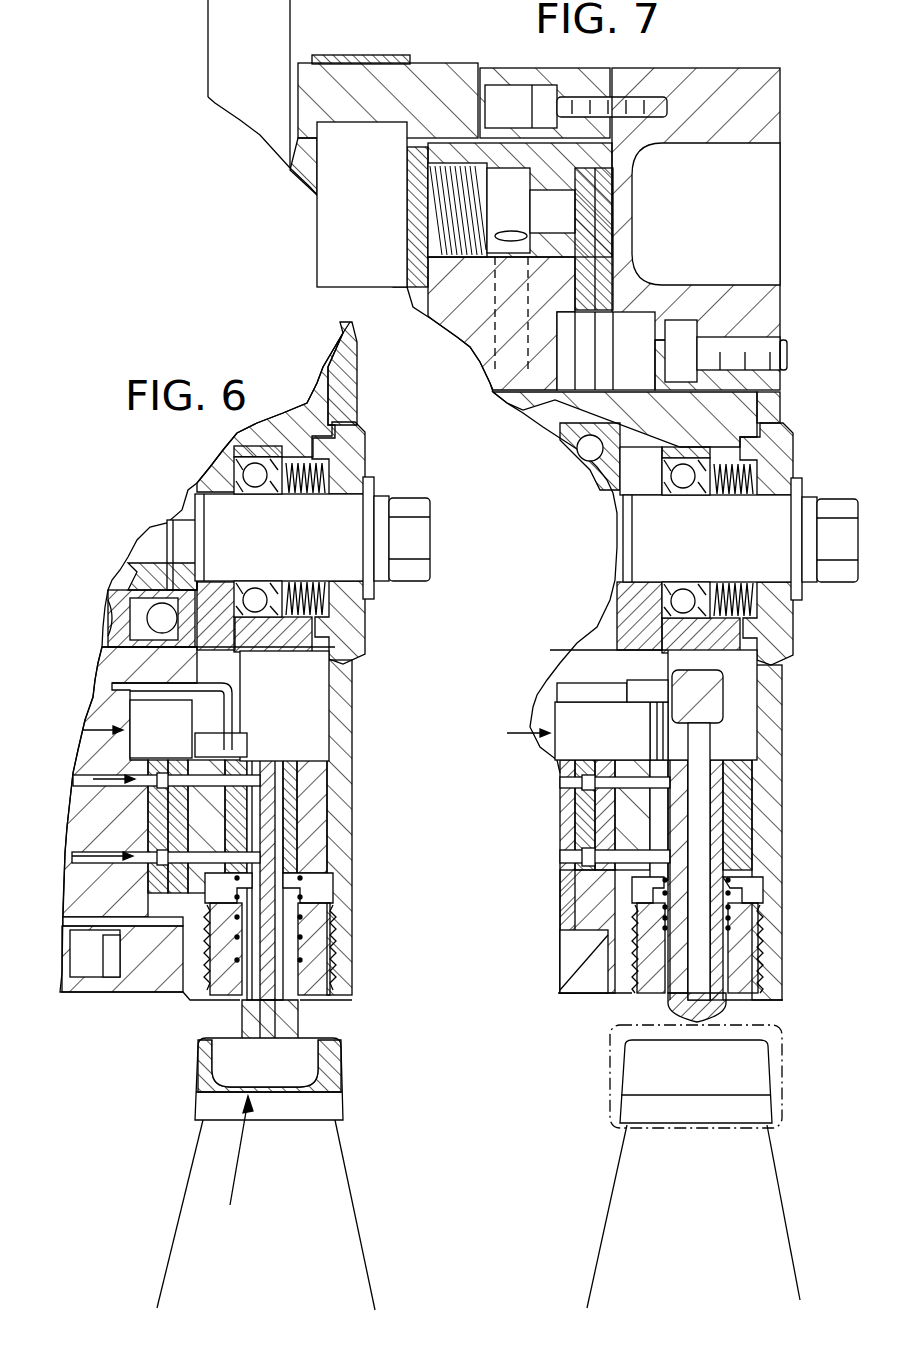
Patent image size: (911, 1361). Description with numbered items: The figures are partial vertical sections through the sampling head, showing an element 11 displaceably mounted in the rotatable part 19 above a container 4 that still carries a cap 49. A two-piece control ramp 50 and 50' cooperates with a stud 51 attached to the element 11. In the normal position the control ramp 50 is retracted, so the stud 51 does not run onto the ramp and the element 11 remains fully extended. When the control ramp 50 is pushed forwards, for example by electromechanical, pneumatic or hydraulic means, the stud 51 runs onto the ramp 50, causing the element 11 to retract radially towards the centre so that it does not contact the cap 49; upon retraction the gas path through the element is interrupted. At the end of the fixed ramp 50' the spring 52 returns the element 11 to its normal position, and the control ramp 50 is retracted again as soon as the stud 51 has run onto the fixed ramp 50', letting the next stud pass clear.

In FIG. 7, the container 4 is at (637, 1167).
In FIG. 6, the container 4 is at (212, 1153).
In FIG. 7, the element 11 is at (667, 1007).
In FIG. 6, the element 11 is at (233, 1020).
In FIG. 7, the rotatable part 19 is at (768, 830).
In FIG. 6, the rotatable part 19 is at (337, 797).
In FIG. 7, the cap 49 is at (607, 1042).
In FIG. 7, the control ramp 50 is at (573, 720).
In FIG. 6, the control ramp 50 is at (114, 726).
In FIG. 6, the fixed ramp 50' is at (262, 706).
In FIG. 7, the stud 51 is at (597, 653).
In FIG. 6, the stud 51 is at (213, 740).
In FIG. 6, the spring 52 is at (323, 957).